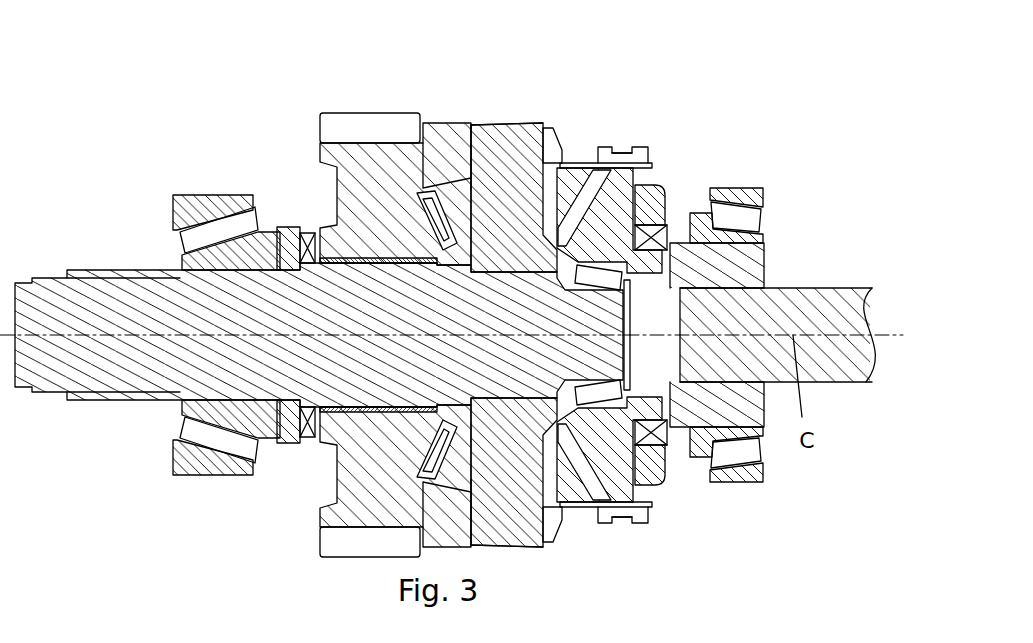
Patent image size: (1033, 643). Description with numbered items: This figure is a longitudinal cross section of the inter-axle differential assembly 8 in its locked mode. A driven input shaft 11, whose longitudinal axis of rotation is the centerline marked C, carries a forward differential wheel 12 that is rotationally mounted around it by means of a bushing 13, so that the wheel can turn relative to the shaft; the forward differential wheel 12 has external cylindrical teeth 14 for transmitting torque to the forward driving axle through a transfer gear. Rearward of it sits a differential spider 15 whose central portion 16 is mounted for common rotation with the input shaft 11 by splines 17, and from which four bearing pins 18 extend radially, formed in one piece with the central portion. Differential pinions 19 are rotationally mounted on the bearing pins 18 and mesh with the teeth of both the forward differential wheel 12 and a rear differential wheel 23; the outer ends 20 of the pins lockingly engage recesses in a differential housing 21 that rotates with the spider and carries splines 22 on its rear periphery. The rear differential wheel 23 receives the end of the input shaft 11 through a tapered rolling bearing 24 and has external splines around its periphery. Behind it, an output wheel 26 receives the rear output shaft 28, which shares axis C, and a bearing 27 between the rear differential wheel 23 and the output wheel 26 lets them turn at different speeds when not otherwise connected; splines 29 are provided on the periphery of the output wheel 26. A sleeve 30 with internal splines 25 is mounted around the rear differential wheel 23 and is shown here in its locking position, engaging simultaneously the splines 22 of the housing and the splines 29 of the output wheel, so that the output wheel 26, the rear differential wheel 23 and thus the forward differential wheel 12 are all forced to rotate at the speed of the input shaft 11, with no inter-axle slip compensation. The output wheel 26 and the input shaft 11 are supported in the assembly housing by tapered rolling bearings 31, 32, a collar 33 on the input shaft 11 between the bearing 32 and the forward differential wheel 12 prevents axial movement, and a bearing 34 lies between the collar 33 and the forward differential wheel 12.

The inter-axle differential assembly 8 is at (166, 135).
The input shaft 11 is at (62, 298).
The forward differential wheel 12 is at (347, 180).
The bushing 13 is at (343, 260).
The cylindrical teeth 14 is at (342, 132).
The differential spider 15 is at (475, 142).
The central portion 16 is at (453, 258).
The splines 17 is at (496, 272).
The bearing pins 18 is at (506, 157).
The differential pinions 19 is at (553, 193).
The outer ends 20 is at (495, 132).
The differential housing 21 is at (553, 137).
The splines 22 is at (588, 157).
The rear differential wheel 23 is at (619, 148).
The tapered rolling bearing 24 is at (640, 240).
The internal splines 25 is at (615, 183).
The output wheel 26 is at (743, 270).
The bearing 27 is at (600, 275).
The rear output shaft 28 is at (803, 300).
The splines 29 is at (640, 207).
The sleeve 30 is at (633, 153).
The tapered rolling bearing 31 is at (740, 197).
The tapered rolling bearing 32 is at (190, 205).
The collar 33 is at (288, 232).
The bearing 34 is at (308, 257).